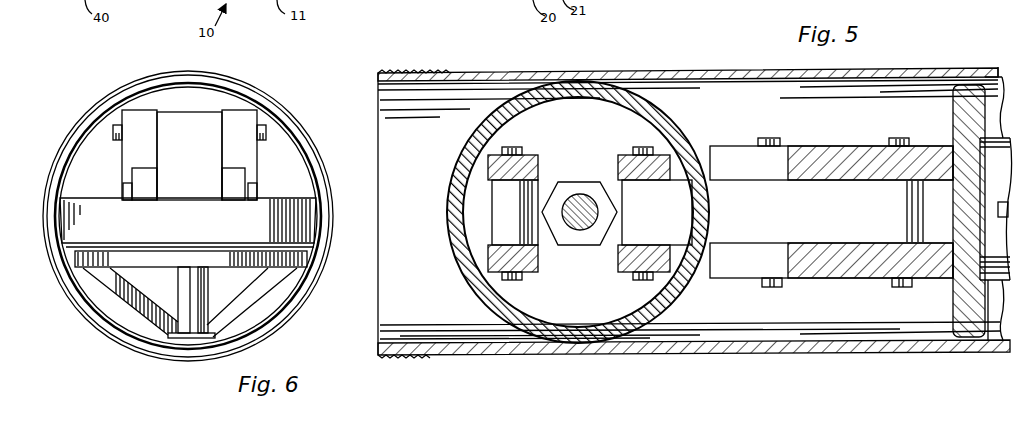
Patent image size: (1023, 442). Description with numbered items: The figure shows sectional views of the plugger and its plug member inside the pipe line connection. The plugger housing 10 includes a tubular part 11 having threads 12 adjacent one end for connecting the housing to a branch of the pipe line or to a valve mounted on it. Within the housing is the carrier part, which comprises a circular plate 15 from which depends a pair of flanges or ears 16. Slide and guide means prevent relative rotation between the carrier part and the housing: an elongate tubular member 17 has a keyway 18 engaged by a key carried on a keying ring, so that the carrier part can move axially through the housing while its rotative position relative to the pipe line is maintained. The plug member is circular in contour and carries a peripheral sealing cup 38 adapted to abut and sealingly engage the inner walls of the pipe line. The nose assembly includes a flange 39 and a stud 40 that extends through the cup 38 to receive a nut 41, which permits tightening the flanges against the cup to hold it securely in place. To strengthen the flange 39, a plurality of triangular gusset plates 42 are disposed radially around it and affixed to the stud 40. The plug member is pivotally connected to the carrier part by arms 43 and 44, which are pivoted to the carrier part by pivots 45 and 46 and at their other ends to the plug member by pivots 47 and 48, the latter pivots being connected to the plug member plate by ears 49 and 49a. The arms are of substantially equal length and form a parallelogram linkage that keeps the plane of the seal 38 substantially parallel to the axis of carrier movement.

In FIG. 6, the plugger housing 10 is at (66, 138).
In FIG. 5, the plugger housing 10 is at (478, 69).
In FIG. 6, the tubular part 11 is at (80, 124).
In FIG. 5, the tubular part 11 is at (512, 70).
In FIG. 6, the threads 12 is at (92, 106).
In FIG. 5, the threads 12 is at (418, 70).
In FIG. 6, the circular plate 15 is at (72, 180).
In FIG. 5, the circular plate 15 is at (965, 302).
In FIG. 6, the flanges or ears 16 is at (130, 155).
In FIG. 5, the flanges or ears 16 is at (823, 146).
In FIG. 5, the elongate tubular member 17 is at (1008, 195).
In FIG. 5, the keyway 18 is at (1002, 218).
In FIG. 6, the sealing cup 38 is at (318, 207).
In FIG. 5, the sealing cup 38 is at (462, 160).
In FIG. 6, the flange 39 is at (306, 258).
In FIG. 6, the stud 40 is at (203, 335).
In FIG. 5, the stud 40 is at (578, 196).
In FIG. 5, the nut 41 is at (585, 238).
In FIG. 6, the triangular gusset plates 42 is at (262, 290).
In FIG. 5, the arm 43 is at (672, 219).
In FIG. 6, the arm 44 is at (188, 128).
In FIG. 5, the arm 44 is at (550, 250).
In FIG. 5, the pivot 45 is at (904, 138).
In FIG. 6, the pivot 46 is at (268, 128).
In FIG. 5, the pivot 46 is at (770, 138).
In FIG. 5, the pivot 47 is at (645, 150).
In FIG. 6, the pivot 48 is at (260, 185).
In FIG. 5, the pivot 48 is at (512, 148).
In FIG. 5, the ear 49 is at (620, 262).
In FIG. 6, the ear 49a is at (246, 170).
In FIG. 5, the ear 49a is at (540, 168).